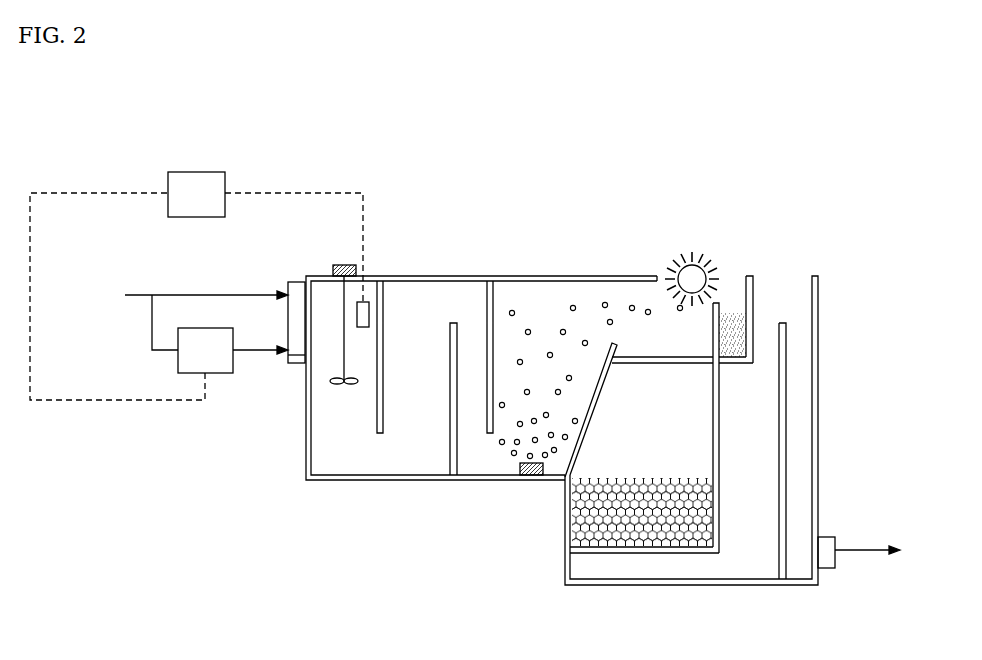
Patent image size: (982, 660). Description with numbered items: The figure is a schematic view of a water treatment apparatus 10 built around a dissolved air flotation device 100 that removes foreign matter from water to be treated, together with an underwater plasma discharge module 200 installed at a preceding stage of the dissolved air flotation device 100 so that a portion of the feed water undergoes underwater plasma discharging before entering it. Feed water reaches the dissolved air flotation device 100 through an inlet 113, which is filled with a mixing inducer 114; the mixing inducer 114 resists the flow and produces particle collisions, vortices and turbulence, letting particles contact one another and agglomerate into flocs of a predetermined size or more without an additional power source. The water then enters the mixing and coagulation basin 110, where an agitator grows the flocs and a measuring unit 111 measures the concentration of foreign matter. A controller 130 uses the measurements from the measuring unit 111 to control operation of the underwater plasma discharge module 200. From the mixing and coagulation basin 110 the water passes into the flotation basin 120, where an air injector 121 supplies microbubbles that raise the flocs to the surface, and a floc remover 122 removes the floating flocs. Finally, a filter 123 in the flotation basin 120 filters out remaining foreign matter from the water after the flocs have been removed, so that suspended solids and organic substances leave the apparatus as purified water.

The water treatment apparatus 10 is at (477, 119).
The dissolved air flotation device 100 is at (500, 276).
The mixing and coagulation basin 110 is at (352, 467).
The measuring unit 111 is at (364, 302).
The inlet 113 is at (293, 376).
The mixing inducer 114 is at (297, 281).
The flotation basin 120 is at (493, 457).
The air injector 121 is at (533, 476).
The floc remover 122 is at (700, 259).
The filter 123 is at (640, 535).
The controller 130 is at (196, 286).
The underwater plasma discharge module 200 is at (159, 323).